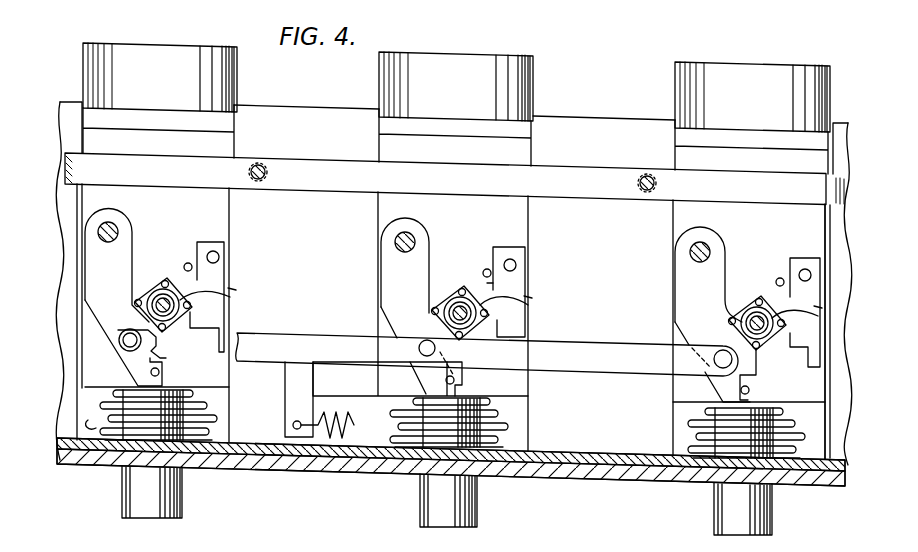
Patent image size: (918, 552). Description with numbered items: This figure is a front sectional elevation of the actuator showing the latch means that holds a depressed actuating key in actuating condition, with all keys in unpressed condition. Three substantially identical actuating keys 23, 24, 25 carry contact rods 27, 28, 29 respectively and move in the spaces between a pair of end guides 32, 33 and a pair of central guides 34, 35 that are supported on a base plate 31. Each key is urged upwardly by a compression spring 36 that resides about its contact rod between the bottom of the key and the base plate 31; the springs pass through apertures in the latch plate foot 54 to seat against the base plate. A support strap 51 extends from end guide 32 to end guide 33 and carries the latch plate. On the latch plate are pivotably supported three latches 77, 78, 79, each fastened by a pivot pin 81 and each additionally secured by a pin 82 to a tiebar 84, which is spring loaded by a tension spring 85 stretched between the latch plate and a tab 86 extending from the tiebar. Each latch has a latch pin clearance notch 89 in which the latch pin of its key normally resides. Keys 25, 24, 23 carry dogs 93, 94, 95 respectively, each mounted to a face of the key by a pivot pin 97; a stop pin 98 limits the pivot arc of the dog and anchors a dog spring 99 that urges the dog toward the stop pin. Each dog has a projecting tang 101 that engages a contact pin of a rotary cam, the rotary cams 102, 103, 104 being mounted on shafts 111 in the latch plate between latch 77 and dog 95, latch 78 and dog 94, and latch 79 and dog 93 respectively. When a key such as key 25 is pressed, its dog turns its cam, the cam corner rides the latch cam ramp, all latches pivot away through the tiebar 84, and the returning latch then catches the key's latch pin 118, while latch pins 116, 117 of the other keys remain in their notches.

The actuating key 23 is at (685, 390).
The actuating key 24 is at (387, 380).
The actuating key 25 is at (216, 386).
The contact rod 27 is at (773, 512).
The contact rod 28 is at (478, 506).
The contact rod 29 is at (183, 498).
The base plate 31 is at (451, 484).
The end guide 32 is at (66, 100).
The end guide 33 is at (840, 125).
The central guide 34 is at (273, 127).
The central guide 35 is at (567, 130).
The compression spring 36 is at (88, 428).
The support strap 51 is at (568, 176).
The latch plate foot 54 is at (578, 472).
The latch 77 is at (714, 273).
The latch 78 is at (386, 266).
The latch 79 is at (110, 323).
The pivot pin 81 is at (116, 228).
The pin 82 is at (128, 333).
The tiebar 84 is at (582, 366).
The tension spring 85 is at (348, 412).
The tab 86 is at (284, 406).
The latch pin clearance notch 89 is at (160, 369).
The dog 93 is at (215, 275).
The dog 94 is at (525, 256).
The dog 95 is at (784, 282).
The pivot pin 97 is at (211, 250).
The stop pin 98 is at (488, 269).
The dog spring 99 is at (524, 282).
The tang 101 is at (232, 298).
The rotary cam 102 is at (767, 350).
The rotary cam 103 is at (494, 339).
The rotary cam 104 is at (184, 331).
The shaft 111 is at (167, 303).
The latch pin 116 is at (768, 406).
The latch pin 117 is at (490, 394).
The latch pin 118 is at (162, 375).